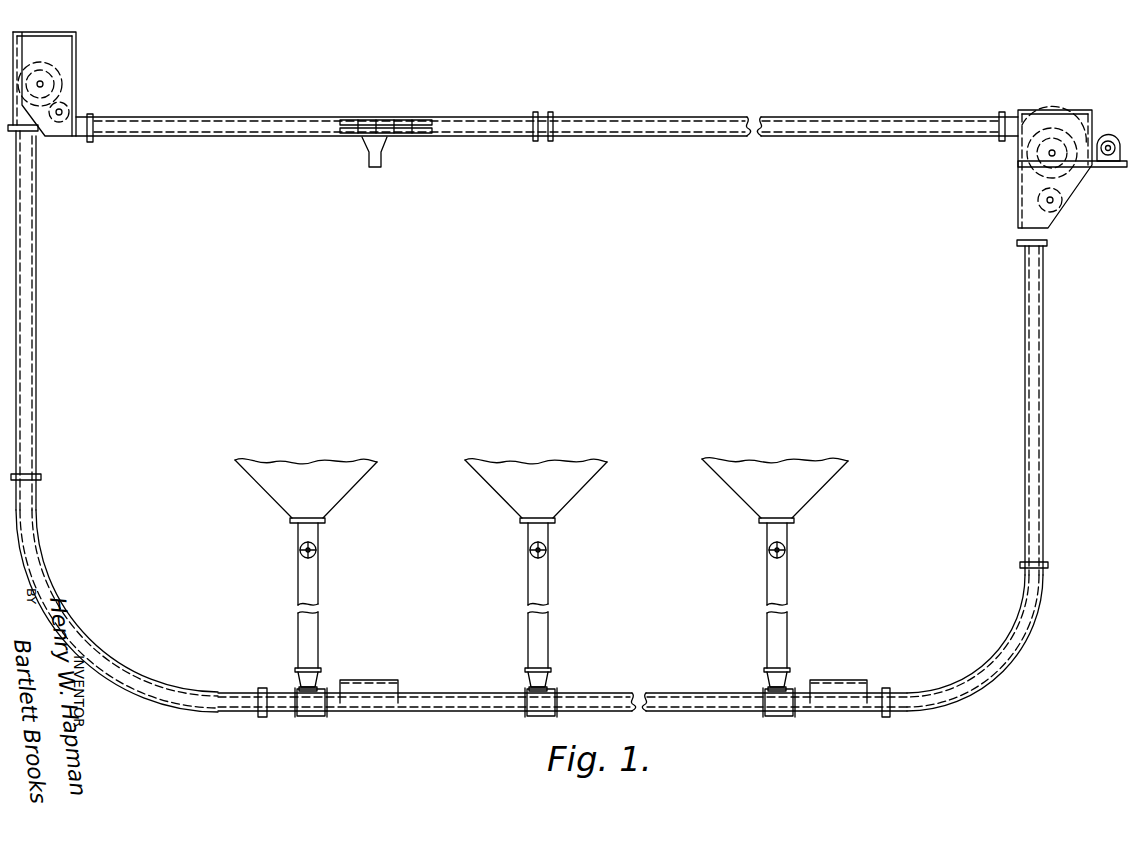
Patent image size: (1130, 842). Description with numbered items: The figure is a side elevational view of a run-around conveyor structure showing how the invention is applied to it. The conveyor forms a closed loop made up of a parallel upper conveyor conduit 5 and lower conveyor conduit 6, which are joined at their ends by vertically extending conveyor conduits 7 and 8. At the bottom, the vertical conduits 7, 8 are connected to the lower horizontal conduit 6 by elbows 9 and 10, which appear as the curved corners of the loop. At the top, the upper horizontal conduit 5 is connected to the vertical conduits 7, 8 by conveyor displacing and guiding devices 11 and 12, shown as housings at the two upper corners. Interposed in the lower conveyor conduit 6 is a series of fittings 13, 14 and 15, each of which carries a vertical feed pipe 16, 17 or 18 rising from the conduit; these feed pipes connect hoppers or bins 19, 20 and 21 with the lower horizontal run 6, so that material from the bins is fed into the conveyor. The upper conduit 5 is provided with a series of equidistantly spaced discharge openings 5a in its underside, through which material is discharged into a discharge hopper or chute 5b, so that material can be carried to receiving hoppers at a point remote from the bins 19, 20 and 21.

The upper conveyor conduit 5 is at (572, 118).
The discharge openings 5a is at (381, 119).
The discharge hopper or chute 5b is at (386, 143).
The lower conveyor conduit 6 is at (689, 693).
The vertical conveyor conduit 7 is at (38, 380).
The vertical conveyor conduit 8 is at (1024, 367).
The elbow 9 is at (112, 662).
The elbow 10 is at (1000, 662).
The conveyor displacing and guiding device 11 is at (82, 71).
The conveyor displacing and guiding device 12 is at (1100, 110).
The fitting 13 is at (311, 704).
The fitting 14 is at (540, 704).
The fitting 15 is at (778, 706).
The vertical feed pipe 16 is at (316, 582).
The vertical feed pipe 17 is at (546, 582).
The vertical feed pipe 18 is at (785, 582).
The hopper or bin 19 is at (335, 488).
The hopper or bin 20 is at (565, 488).
The hopper or bin 21 is at (803, 487).